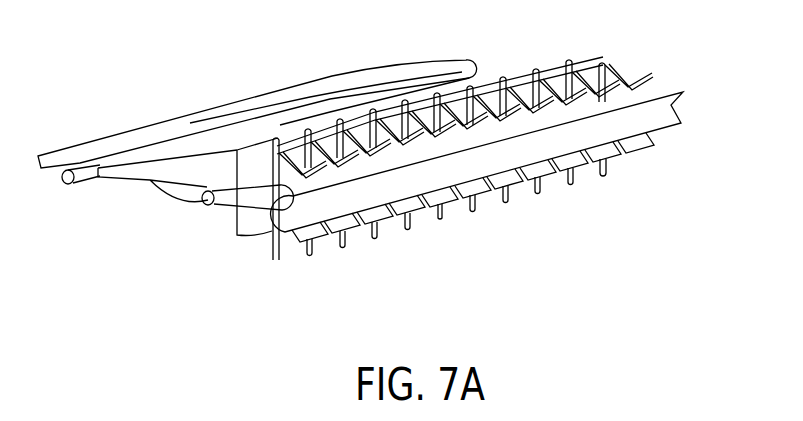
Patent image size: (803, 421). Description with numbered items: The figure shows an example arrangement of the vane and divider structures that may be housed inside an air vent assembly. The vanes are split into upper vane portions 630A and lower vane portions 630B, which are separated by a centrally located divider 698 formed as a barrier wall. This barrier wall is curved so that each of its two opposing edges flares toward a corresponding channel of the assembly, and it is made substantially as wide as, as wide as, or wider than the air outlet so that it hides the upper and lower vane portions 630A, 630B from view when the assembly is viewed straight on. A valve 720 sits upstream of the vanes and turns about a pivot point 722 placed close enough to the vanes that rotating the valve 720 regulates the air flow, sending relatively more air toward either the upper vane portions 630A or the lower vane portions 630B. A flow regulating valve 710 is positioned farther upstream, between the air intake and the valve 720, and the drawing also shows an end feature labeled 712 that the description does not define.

The flow regulating valve 710 is at (248, 108).
The rod end 712 is at (68, 188).
The valve 720 is at (180, 192).
The pivot point 722 is at (215, 212).
The divider 698 is at (670, 107).
The upper vane portions 630A is at (617, 77).
The lower vane portions 630B is at (320, 243).